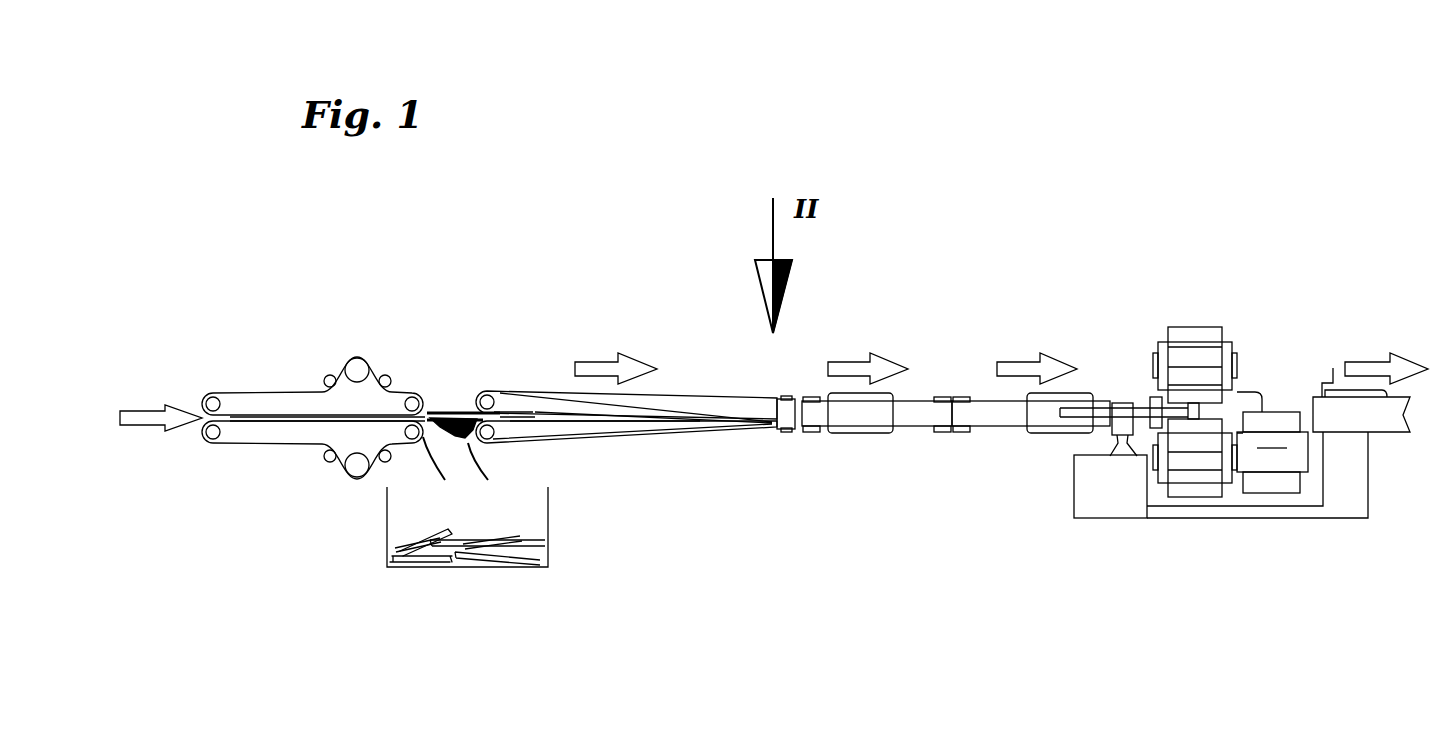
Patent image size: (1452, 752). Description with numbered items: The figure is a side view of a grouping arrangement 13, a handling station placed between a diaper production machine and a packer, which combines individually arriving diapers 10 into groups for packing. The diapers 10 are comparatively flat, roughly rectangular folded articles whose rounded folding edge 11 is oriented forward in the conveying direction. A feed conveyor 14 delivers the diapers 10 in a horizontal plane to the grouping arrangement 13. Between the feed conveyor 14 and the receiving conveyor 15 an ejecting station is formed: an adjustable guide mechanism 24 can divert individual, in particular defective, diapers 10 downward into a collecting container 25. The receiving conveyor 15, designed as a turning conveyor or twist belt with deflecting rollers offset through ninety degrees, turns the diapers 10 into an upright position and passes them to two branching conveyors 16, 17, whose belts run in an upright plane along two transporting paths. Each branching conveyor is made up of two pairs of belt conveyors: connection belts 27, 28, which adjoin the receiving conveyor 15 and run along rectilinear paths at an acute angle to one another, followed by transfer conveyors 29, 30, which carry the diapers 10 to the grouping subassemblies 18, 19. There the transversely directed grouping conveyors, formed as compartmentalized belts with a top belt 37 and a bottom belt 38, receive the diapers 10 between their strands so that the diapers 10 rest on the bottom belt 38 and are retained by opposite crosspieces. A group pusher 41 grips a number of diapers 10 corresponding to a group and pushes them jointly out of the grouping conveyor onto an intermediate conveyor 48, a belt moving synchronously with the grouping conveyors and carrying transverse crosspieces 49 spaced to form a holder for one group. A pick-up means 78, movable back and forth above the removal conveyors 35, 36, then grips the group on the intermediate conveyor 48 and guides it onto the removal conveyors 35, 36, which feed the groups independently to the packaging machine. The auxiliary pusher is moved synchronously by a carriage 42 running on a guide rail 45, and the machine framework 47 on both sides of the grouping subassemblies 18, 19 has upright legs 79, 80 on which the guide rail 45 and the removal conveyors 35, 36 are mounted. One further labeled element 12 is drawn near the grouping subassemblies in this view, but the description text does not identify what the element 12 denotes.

The diapers 10 is at (253, 420).
The rounded folding edge 11 is at (300, 418).
The transfer device 12 is at (1258, 352).
The grouping arrangement 13 is at (880, 278).
The feed conveyor 14 is at (268, 483).
The receiving conveyor 15 is at (587, 305).
The branching conveyor 16 is at (1031, 340).
The branching conveyor 17 is at (1016, 322).
The grouping subassembly 18 is at (1195, 343).
The grouping subassembly 19 is at (1183, 270).
The adjustable guide mechanism 24 is at (462, 418).
The collecting container 25 is at (385, 520).
The connection belt 27 is at (900, 361).
The connection belt 28 is at (934, 360).
The transfer conveyor 29 is at (995, 466).
The transfer conveyor 30 is at (975, 455).
The removal conveyor 35 is at (1366, 504).
The removal conveyor 36 is at (1385, 433).
The top belt 37 is at (1143, 300).
The bottom belt 38 is at (1196, 528).
The group pusher 41 is at (1193, 405).
The carriage 42 is at (1123, 410).
The guide rail 45 is at (1122, 453).
The machine framework 47 is at (1280, 548).
The intermediate conveyor 48 is at (1250, 525).
The transverse crosspieces 49 is at (1280, 483).
The pick-up means 78 is at (1333, 368).
The upright leg 79 is at (1115, 508).
The upright leg 80 is at (1347, 495).